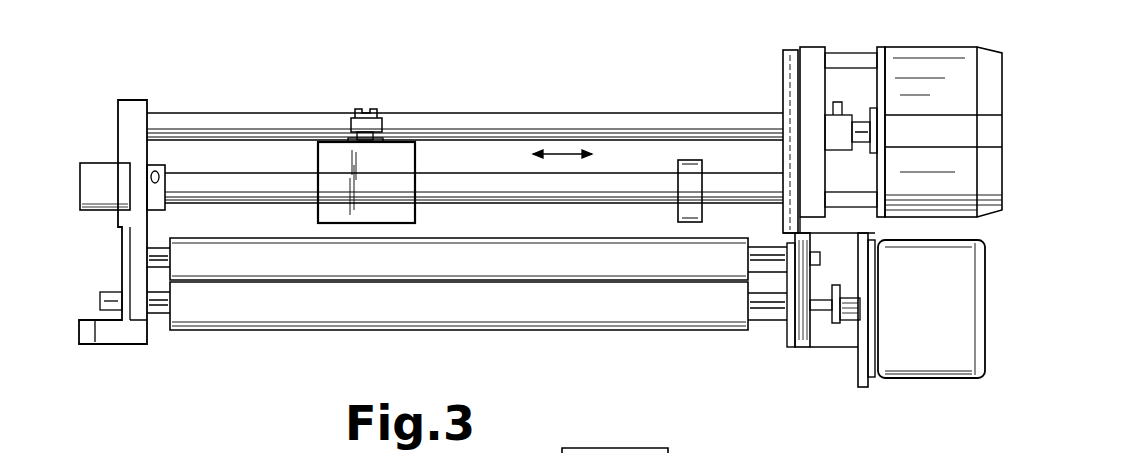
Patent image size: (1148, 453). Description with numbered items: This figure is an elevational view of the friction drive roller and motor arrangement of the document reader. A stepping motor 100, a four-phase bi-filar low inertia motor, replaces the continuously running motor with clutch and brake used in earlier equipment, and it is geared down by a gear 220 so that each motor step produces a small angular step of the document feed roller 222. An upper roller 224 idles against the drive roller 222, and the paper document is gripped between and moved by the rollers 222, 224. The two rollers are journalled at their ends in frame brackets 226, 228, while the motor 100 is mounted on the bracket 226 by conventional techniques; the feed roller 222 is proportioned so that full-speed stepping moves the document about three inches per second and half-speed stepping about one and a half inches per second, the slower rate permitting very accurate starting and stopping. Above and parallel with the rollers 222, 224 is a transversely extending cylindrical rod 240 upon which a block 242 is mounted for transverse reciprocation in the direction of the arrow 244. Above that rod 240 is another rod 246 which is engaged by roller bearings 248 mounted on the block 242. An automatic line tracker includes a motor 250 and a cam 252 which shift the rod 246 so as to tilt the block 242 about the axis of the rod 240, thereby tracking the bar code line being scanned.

The motor 100 is at (940, 352).
The gear 220 is at (850, 326).
The document feed roller 222 is at (504, 312).
The upper roller 224 is at (547, 252).
The frame bracket 226 is at (795, 338).
The frame bracket 228 is at (140, 330).
The cylindrical rod 240 is at (639, 180).
The block 242 is at (415, 160).
The arrow 244 is at (567, 154).
The rod 246 is at (243, 125).
The roller bearings 248 is at (385, 120).
The motor 250 is at (945, 65).
The cam 252 is at (836, 112).